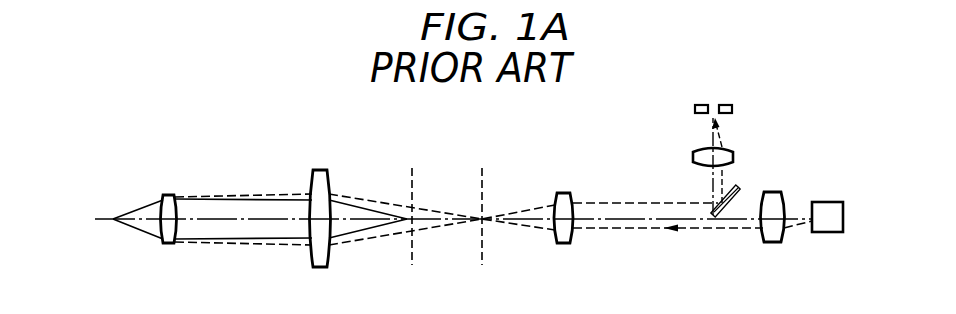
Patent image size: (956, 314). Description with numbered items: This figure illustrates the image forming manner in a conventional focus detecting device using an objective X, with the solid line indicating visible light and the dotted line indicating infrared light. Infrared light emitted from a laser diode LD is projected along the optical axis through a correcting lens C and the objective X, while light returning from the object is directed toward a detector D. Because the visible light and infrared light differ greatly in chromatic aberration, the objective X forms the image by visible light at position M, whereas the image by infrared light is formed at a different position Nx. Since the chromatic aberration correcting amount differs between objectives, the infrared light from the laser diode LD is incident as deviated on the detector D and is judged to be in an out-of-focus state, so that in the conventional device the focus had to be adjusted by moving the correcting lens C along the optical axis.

The objective X is at (169, 202).
The image position by visible light M is at (411, 204).
The image position by infrared light Nx is at (477, 204).
The correcting lens C is at (563, 205).
The detector D is at (707, 159).
The laser diode LD is at (827, 217).